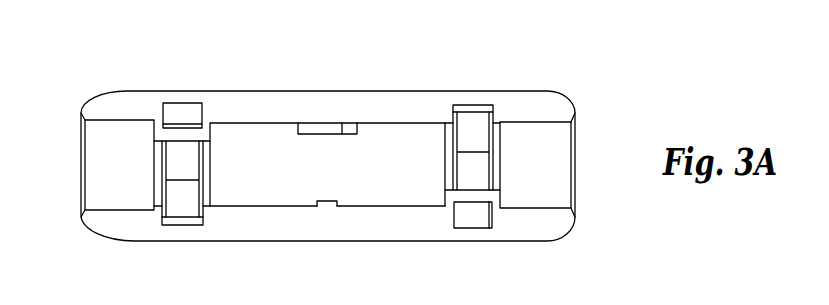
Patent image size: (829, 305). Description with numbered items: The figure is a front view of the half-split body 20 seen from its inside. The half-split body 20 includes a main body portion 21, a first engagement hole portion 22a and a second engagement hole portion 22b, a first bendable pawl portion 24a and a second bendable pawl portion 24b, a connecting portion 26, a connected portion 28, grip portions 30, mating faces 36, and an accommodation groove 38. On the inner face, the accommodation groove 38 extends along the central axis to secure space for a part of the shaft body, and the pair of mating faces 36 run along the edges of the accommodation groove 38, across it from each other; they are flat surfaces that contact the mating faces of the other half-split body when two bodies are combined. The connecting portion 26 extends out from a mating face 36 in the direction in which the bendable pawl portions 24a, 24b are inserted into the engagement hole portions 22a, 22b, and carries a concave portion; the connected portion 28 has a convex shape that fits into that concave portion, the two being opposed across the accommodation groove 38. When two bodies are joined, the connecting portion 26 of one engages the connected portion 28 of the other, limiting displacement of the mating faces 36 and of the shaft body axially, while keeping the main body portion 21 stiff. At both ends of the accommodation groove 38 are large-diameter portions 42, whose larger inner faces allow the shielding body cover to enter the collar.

The half-split body 20 is at (313, 276).
The main body portion 21 is at (265, 151).
The first engagement hole portion 22a is at (180, 223).
The second engagement hole portion 22b is at (470, 104).
The first bendable pawl portion 24a is at (183, 112).
The second bendable pawl portion 24b is at (472, 217).
The connecting portion 26 is at (340, 123).
The connected portion 28 is at (332, 196).
The grip portions 30 is at (172, 152).
The mating faces 36 is at (403, 105).
The accommodation groove 38 is at (408, 195).
The large-diameter portions 42 is at (102, 179).